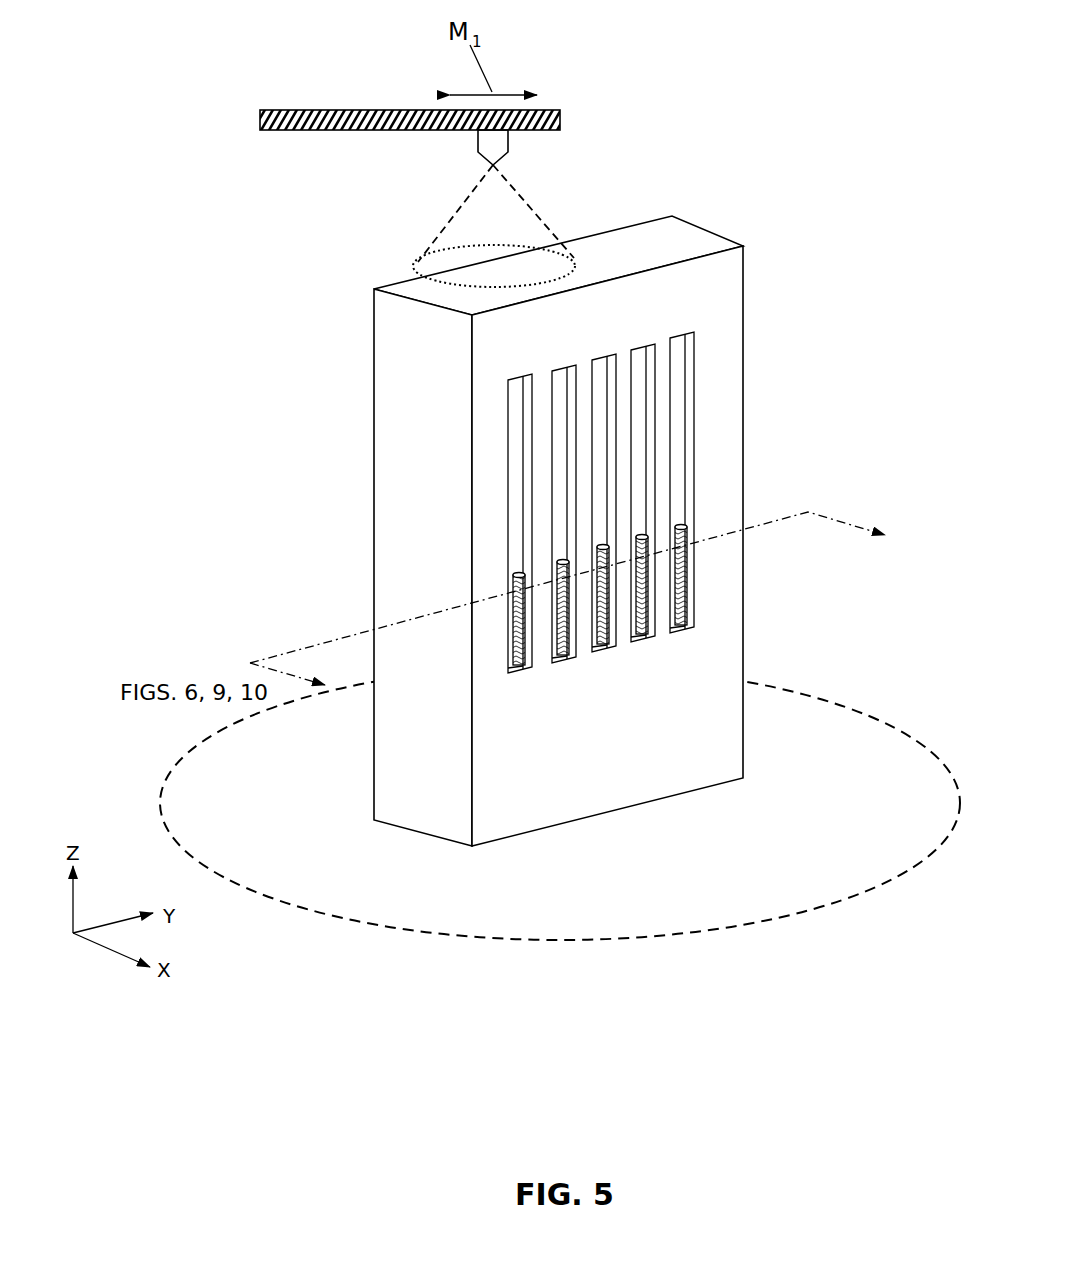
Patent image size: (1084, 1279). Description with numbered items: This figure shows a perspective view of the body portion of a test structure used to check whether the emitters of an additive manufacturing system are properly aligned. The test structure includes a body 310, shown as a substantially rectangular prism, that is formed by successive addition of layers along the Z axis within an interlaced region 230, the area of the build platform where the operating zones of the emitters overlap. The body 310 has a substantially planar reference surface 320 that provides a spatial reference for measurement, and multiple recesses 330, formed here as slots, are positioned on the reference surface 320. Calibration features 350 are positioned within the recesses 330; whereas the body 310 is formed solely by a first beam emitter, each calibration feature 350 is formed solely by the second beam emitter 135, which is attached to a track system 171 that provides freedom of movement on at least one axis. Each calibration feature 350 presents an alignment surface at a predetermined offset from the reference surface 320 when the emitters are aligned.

The track system 171 is at (290, 128).
The second beam emitter 135 is at (500, 148).
The body 310 is at (373, 352).
The recesses 330 is at (680, 357).
The calibration features 350 is at (684, 527).
The reference surface 320 is at (695, 702).
The interlaced region 230 is at (192, 573).